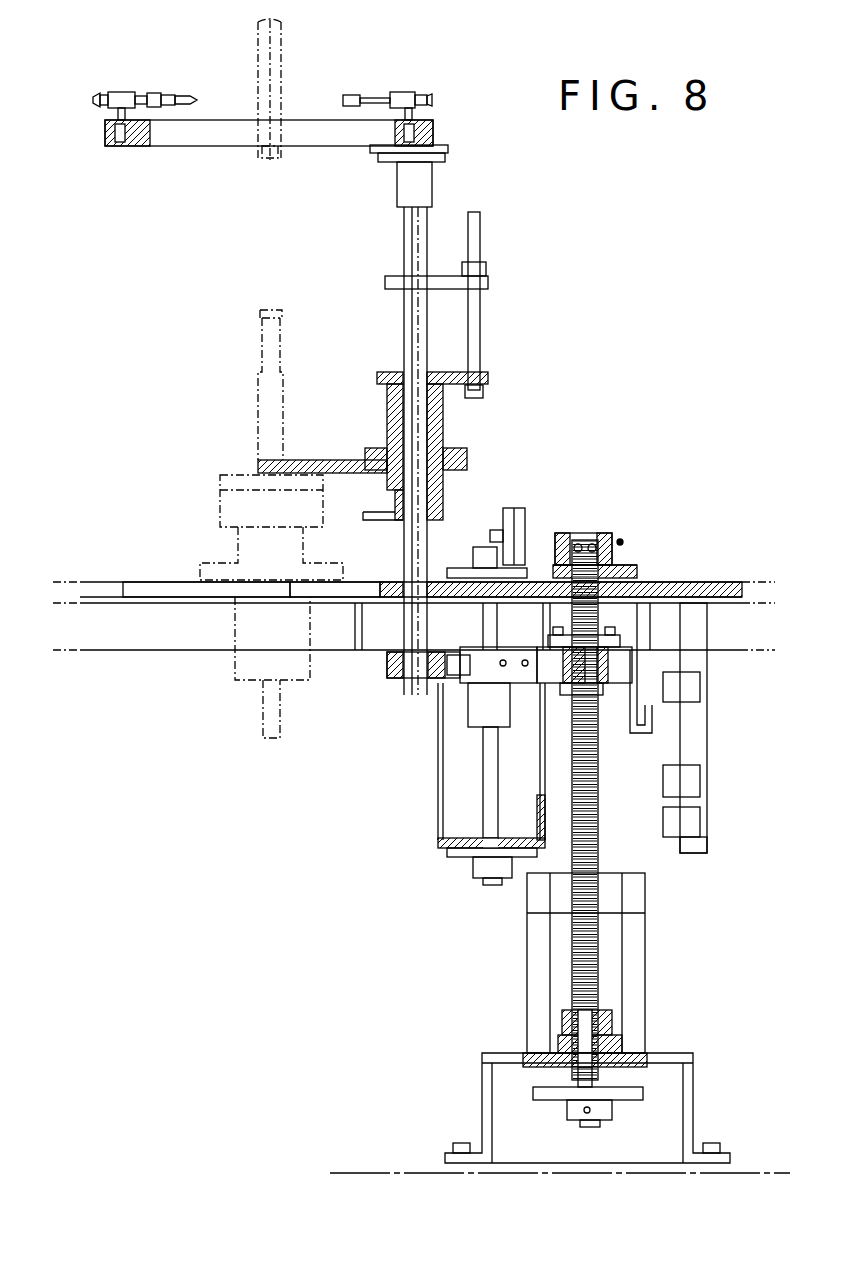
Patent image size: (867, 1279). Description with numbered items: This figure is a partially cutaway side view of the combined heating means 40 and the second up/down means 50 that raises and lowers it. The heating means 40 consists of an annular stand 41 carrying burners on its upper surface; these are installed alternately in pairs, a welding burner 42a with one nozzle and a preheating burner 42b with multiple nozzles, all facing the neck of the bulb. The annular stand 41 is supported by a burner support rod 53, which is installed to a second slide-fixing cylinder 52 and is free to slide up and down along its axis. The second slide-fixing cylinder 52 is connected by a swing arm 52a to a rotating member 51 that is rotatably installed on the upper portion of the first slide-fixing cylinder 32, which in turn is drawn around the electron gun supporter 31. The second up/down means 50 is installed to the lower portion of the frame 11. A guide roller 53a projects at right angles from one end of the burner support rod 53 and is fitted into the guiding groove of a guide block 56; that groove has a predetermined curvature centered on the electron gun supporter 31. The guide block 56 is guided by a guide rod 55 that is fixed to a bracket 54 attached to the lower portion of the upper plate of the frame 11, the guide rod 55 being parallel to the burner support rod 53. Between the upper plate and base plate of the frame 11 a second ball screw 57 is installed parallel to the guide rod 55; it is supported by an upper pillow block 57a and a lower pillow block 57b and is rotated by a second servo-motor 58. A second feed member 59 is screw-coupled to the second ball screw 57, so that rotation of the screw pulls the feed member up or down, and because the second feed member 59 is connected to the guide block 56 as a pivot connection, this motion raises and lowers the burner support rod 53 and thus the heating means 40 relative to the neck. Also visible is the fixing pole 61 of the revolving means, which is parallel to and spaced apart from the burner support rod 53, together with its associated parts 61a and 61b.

The frame 11 is at (720, 582).
The electron gun supporter 31 is at (265, 415).
The first slide-fixing cylinder 32 is at (235, 517).
The heating means 40 is at (158, 158).
The annular stand 41 is at (234, 137).
The welding burner 42a is at (102, 108).
The preheating burner 42b is at (400, 91).
The second up/down means 50 is at (358, 958).
The rotating member 51 is at (220, 487).
The second slide-fixing cylinder 52 is at (445, 440).
The swing arm 52a is at (323, 460).
The burner support rod 53 is at (405, 235).
The guide roller 53a is at (452, 672).
The bracket 54 is at (440, 812).
The guide rod 55 is at (462, 868).
The guide block 56 is at (470, 700).
The second ball screw 57 is at (598, 935).
The pillow block 57a is at (606, 533).
The pillow block 57b is at (622, 1032).
The second servo-motor 58 is at (535, 950).
The second feed member 59 is at (650, 580).
The fixing pole 61 is at (478, 258).
The flange 61a is at (455, 390).
The plate 61b is at (446, 289).